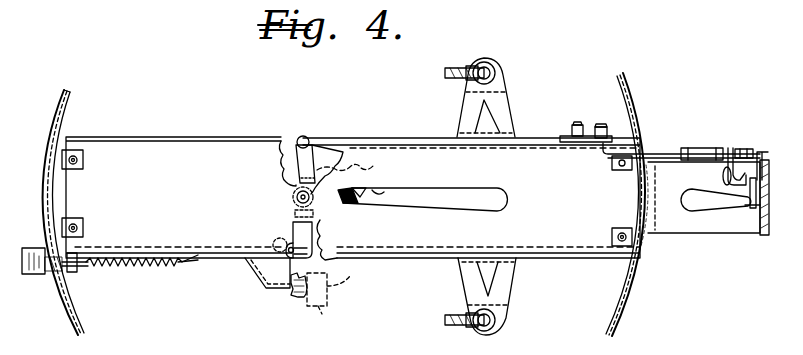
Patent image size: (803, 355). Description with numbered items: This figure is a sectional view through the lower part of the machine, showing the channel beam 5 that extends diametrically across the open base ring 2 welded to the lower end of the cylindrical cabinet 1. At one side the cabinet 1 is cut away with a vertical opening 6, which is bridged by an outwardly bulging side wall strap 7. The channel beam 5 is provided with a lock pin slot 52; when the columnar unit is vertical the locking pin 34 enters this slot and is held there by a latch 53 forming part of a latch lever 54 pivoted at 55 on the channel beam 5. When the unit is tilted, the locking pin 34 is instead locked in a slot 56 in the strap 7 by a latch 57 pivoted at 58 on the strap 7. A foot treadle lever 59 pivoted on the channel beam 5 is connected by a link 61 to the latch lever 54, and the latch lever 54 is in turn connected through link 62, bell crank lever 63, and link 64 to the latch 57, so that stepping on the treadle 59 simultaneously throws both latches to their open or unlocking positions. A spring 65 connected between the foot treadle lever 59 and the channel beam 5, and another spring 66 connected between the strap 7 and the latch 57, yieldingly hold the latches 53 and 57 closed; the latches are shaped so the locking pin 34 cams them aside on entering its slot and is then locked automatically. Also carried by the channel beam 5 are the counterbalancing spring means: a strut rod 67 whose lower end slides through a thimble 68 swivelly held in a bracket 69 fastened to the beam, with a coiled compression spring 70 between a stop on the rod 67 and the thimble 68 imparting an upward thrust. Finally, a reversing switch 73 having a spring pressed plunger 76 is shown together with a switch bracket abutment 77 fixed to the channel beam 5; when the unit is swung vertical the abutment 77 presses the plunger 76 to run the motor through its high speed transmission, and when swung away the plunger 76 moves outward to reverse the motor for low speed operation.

The main support or cabinet 1 is at (61, 103).
The base ring 2 is at (72, 118).
The channel beam 5 is at (183, 142).
The vertical opening 6 is at (641, 283).
The side wall strap 7 is at (701, 230).
The locking pin 34 is at (352, 204).
The lock pin slot 52 is at (441, 190).
The latch 53 is at (384, 192).
The latch lever 54 is at (300, 156).
The pivot 55 is at (296, 197).
The slot 56 is at (741, 201).
The latch 57 is at (753, 210).
The pivot 58 is at (722, 177).
The foot treadle lever 59 is at (36, 276).
The link 61 is at (214, 248).
The link 62 is at (331, 139).
The bell crank lever 63 is at (589, 123).
The link 64 is at (676, 152).
The spring 65 is at (124, 268).
The spring 66 is at (748, 148).
The strut rod 67 is at (470, 66).
The thimble 68 is at (494, 66).
The bracket 69 is at (506, 116).
The coiled compression spring 70 is at (450, 70).
The reversing switch 73 is at (326, 308).
The spring pressed plunger 76 is at (298, 298).
The switch bracket abutment 77 is at (267, 268).